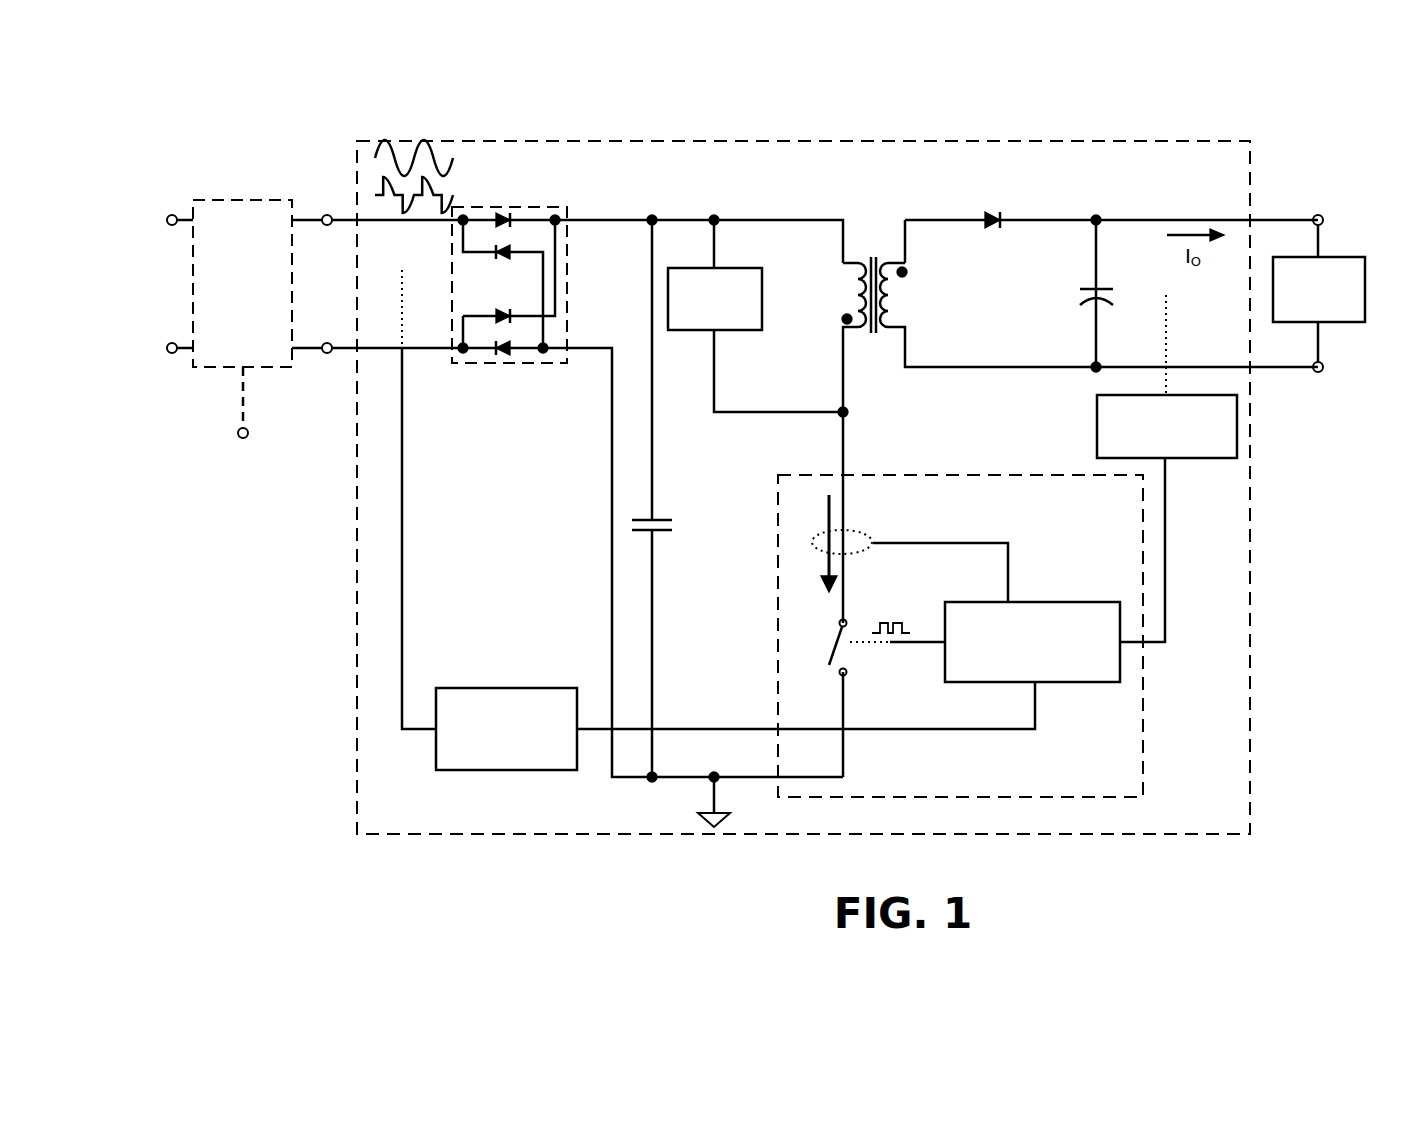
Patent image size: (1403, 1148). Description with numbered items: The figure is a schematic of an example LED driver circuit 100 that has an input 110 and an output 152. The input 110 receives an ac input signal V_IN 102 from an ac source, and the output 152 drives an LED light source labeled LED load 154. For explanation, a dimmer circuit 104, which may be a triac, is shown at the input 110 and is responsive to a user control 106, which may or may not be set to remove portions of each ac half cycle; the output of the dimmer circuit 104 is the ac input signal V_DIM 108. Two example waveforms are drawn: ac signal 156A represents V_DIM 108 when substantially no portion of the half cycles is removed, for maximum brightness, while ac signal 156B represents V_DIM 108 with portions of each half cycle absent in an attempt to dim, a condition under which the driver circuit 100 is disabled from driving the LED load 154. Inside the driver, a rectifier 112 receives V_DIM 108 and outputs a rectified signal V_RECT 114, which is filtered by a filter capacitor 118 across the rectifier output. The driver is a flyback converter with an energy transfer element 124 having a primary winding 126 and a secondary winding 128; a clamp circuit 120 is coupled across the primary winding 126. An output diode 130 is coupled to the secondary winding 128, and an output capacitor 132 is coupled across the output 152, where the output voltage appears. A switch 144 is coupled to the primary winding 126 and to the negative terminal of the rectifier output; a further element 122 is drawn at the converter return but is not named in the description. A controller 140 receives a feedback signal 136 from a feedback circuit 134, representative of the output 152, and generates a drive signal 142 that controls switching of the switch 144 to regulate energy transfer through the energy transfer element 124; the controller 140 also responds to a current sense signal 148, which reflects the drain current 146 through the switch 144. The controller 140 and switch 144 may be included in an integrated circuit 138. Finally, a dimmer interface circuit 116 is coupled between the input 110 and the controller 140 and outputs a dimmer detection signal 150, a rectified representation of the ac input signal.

The LED driver circuit 100 is at (357, 834).
The ac input signal V_IN 102 is at (168, 313).
The dimmer circuit 104 is at (230, 199).
The user control 106 is at (219, 516).
The ac input signal V_DIM 108 is at (320, 267).
The input 110 is at (316, 353).
The rectifier 112 is at (493, 364).
The rectified signal V_RECT 114 is at (584, 300).
The dimmer interface circuit 116 is at (475, 771).
The filter capacitor C_F 118 is at (669, 536).
The clamp circuit 120 is at (708, 331).
The input return / ground 122 is at (706, 824).
The energy transfer element T1 124 is at (1051, 316).
The primary winding 126 is at (838, 292).
The secondary winding 128 is at (907, 295).
The output diode D1 130 is at (972, 214).
The output capacitor C1 132 is at (1033, 310).
The feedback circuit 134 is at (1093, 425).
The feedback signal U_FB 136 is at (1182, 590).
The integrated circuit 138 is at (1020, 475).
The controller 140 is at (1064, 602).
The drive signal 142 is at (896, 613).
The switch S1 144 is at (798, 635).
The drain current I_D 146 is at (795, 512).
The current sense signal 148 is at (986, 532).
The dimmer detection signal 150 is at (1074, 736).
The output 152 is at (1328, 237).
The LED load 154 is at (1343, 323).
The ac signal 156A is at (445, 160).
The ac signal 156B is at (454, 191).